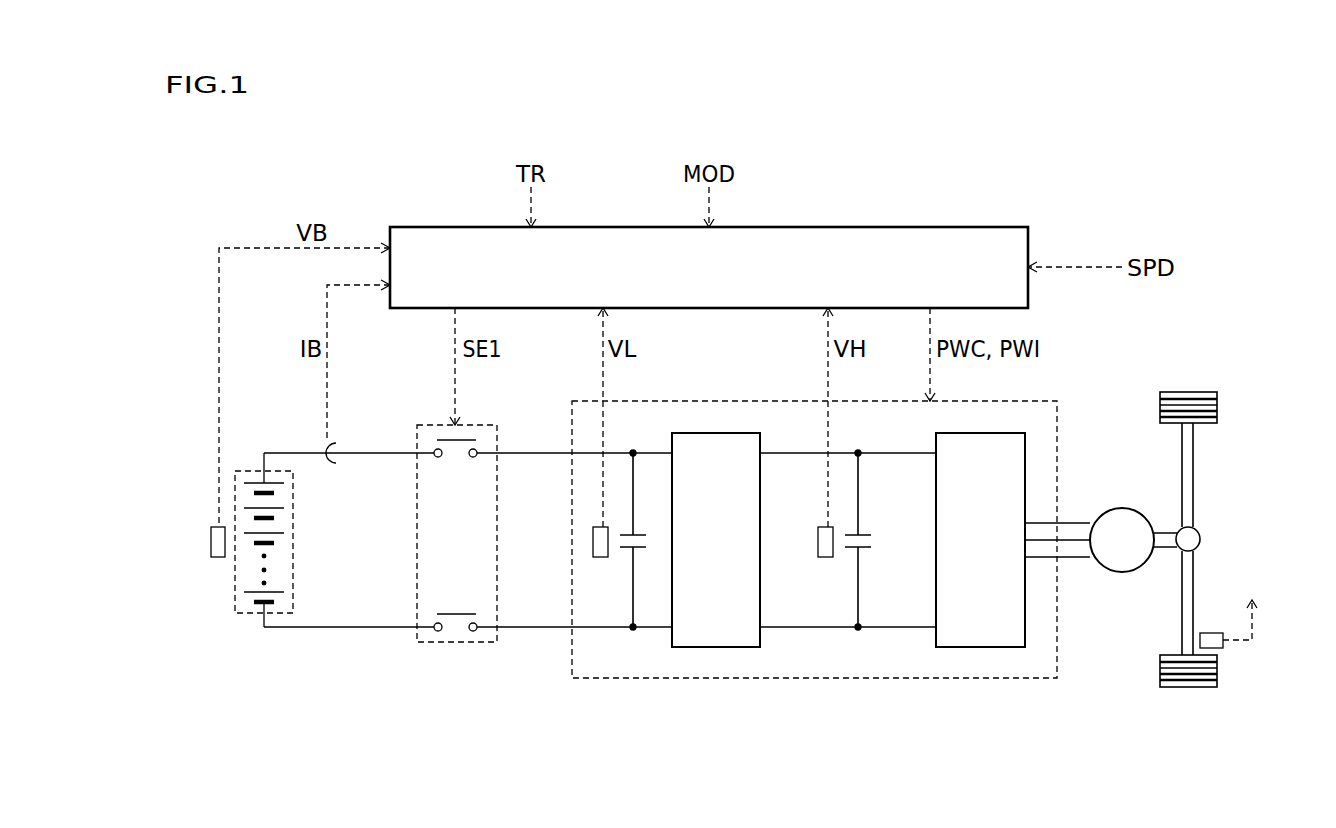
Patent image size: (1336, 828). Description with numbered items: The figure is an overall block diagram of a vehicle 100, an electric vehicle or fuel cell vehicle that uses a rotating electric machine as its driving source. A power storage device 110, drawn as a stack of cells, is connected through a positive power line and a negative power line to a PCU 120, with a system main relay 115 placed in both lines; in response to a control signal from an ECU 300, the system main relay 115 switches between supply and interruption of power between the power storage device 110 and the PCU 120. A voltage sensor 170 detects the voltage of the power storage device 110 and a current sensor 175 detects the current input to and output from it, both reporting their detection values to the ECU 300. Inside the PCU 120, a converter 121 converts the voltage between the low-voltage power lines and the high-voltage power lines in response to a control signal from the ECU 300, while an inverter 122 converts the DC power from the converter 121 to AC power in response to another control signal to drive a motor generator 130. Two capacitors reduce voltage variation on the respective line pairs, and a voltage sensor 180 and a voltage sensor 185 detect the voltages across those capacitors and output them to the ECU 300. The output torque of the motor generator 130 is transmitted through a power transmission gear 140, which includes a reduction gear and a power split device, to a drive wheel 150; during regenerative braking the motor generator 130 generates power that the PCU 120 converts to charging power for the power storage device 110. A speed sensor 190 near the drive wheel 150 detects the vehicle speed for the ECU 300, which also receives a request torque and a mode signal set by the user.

The vehicle 100 is at (1277, 172).
The power storage device 110 is at (249, 471).
The system main relay 115 is at (478, 425).
The PCU (Power Control Unit) 120 is at (777, 525).
The converter 121 is at (709, 433).
The inverter 122 is at (985, 433).
The motor generator 130 is at (1122, 508).
The power transmission gear 140 is at (1200, 540).
The drive wheel 150 is at (1200, 392).
The voltage sensor 170 is at (211, 547).
The current sensor 175 is at (331, 463).
The voltage sensor 180 is at (601, 557).
The voltage sensor 185 is at (826, 557).
The speed sensor 190 is at (1219, 648).
The ECU (Electronic Control Unit) 300 is at (944, 227).